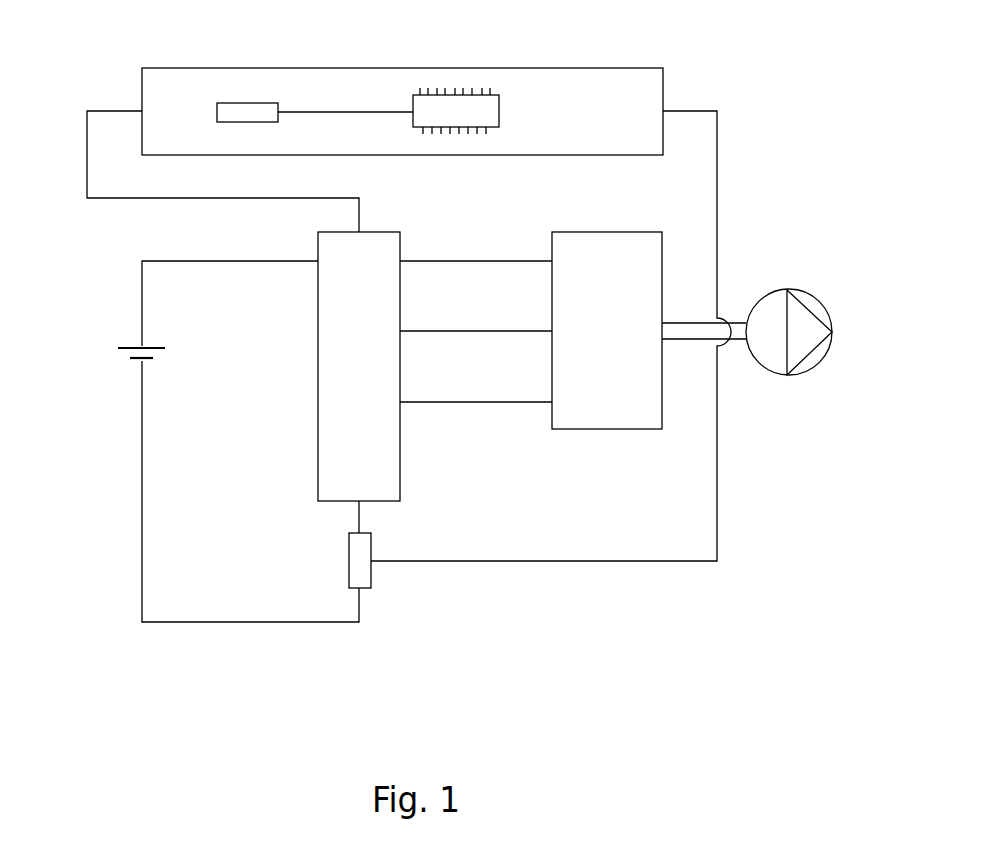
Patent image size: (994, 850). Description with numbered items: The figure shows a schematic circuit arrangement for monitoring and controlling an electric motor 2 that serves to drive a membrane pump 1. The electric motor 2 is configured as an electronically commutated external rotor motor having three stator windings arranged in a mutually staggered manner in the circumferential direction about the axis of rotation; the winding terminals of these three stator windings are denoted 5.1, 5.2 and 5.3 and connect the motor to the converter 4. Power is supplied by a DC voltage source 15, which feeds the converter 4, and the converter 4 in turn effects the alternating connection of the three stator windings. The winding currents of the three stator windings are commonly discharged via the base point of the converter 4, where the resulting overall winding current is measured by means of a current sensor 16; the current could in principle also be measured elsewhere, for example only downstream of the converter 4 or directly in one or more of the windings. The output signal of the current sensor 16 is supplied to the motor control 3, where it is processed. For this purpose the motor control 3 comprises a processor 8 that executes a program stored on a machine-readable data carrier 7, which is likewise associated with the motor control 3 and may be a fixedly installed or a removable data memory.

The membrane pump 1 is at (776, 288).
The electric motor 2 is at (607, 330).
The motor control 3 is at (603, 70).
The converter 4 is at (359, 366).
The winding terminal 5.1 is at (476, 249).
The winding terminal 5.2 is at (476, 318).
The winding terminal 5.3 is at (476, 389).
The machine-readable data carrier 7 is at (248, 110).
The processor 8 is at (441, 105).
The DC voltage source 15 is at (126, 364).
The current sensor 16 is at (372, 573).